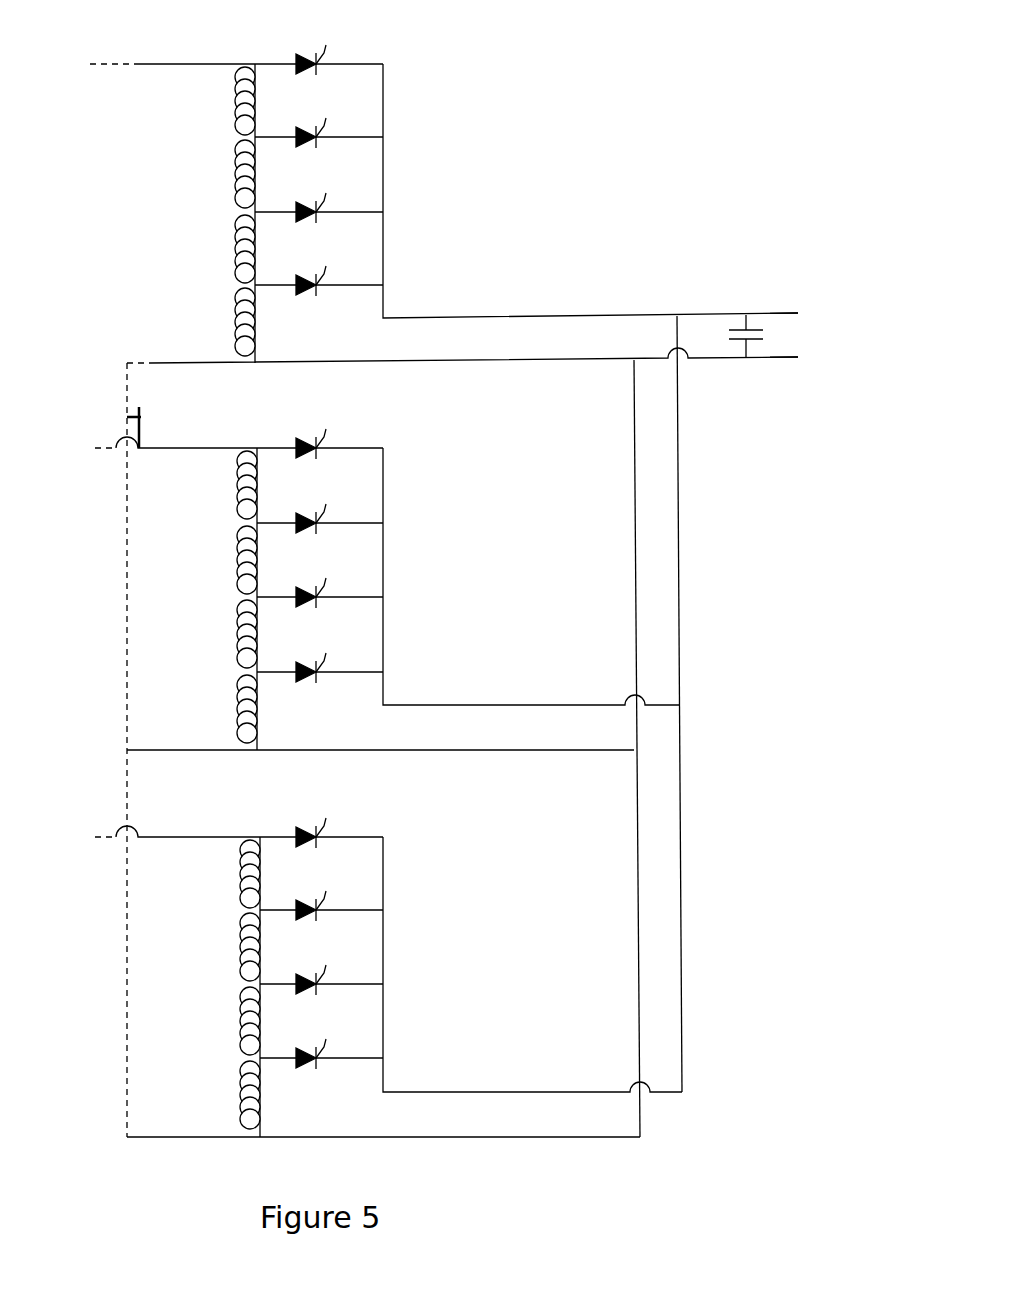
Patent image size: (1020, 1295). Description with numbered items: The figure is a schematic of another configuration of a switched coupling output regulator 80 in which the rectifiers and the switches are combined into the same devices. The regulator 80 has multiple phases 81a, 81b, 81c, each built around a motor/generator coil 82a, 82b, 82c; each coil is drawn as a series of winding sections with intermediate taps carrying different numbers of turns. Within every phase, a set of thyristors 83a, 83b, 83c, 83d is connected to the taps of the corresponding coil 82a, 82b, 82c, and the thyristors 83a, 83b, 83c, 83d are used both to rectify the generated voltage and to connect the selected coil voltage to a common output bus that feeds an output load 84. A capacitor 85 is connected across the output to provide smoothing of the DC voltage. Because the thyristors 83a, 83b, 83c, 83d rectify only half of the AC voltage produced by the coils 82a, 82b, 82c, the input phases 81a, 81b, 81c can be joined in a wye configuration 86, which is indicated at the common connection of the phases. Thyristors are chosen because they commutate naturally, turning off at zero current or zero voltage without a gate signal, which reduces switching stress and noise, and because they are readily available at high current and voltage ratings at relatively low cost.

The switched coupling output regulator 80 is at (541, 28).
The first phase 81a is at (132, 127).
The second phase 81b is at (106, 545).
The third phase 81c is at (108, 950).
The motor/generator coil 82a is at (237, 231).
The motor/generator coil 82b is at (238, 681).
The motor/generator coil 82c is at (244, 925).
The thyristor 83a is at (326, 288).
The thyristor 83b is at (324, 216).
The thyristor 83c is at (324, 140).
The thyristor 83d is at (322, 68).
The output load 84 is at (820, 333).
The capacitor 85 is at (736, 330).
The wye configuration 86 is at (151, 420).